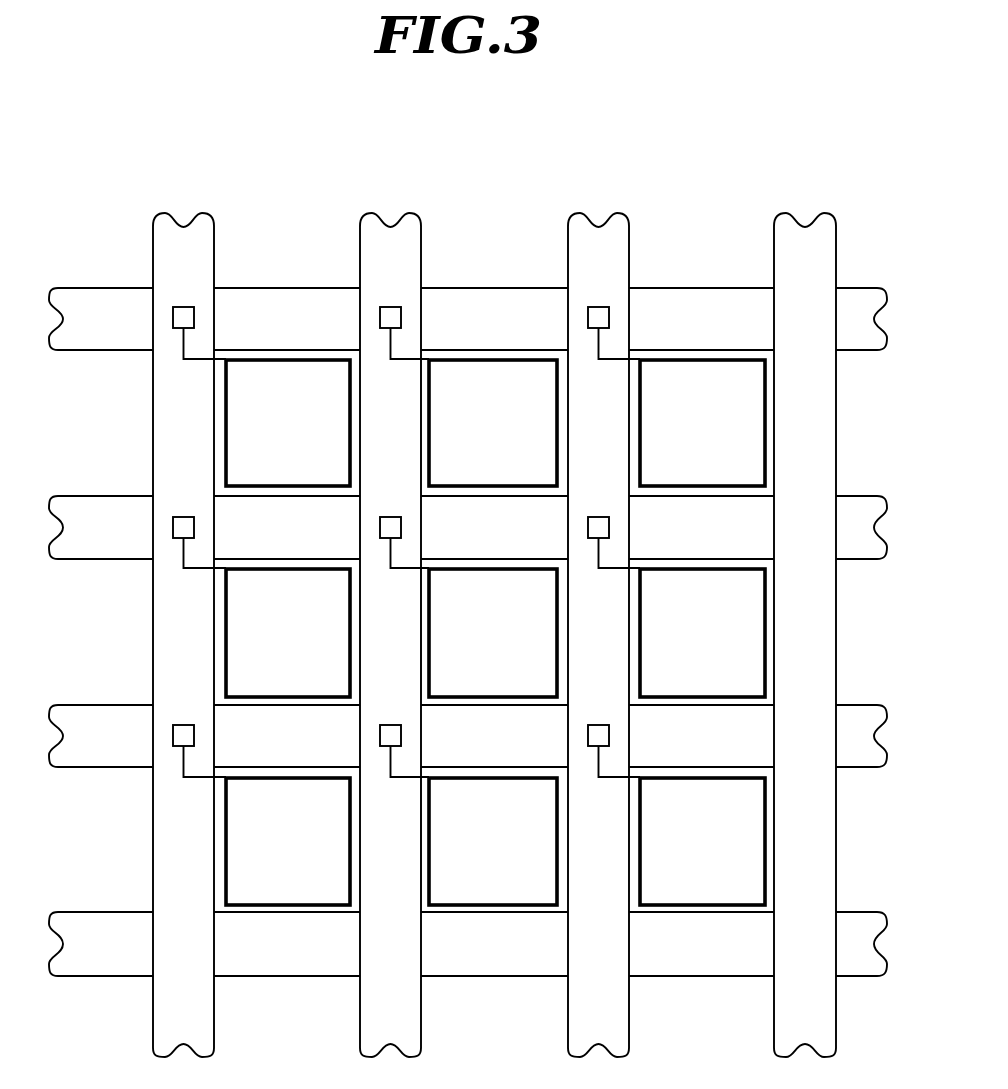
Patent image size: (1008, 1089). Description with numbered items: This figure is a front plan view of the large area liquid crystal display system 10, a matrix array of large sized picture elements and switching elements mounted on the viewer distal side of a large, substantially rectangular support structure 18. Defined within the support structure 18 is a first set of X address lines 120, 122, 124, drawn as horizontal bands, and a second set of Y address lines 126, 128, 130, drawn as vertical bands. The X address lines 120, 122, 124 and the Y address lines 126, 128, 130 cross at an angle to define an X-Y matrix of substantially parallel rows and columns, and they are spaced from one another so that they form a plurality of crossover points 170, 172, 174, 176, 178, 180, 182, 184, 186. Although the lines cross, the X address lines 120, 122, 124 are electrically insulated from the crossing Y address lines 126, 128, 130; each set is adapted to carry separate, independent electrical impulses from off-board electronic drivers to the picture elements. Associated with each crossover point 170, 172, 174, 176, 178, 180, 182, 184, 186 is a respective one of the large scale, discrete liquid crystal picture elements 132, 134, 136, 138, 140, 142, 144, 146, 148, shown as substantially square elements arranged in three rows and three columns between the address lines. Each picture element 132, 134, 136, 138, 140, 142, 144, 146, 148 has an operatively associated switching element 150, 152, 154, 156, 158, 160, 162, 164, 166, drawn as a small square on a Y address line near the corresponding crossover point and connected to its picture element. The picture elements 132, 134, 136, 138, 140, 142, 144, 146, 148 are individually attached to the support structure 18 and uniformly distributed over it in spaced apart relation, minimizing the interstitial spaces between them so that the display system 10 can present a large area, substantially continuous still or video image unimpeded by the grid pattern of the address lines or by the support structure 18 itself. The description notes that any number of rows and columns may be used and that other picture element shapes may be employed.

The display system 10 is at (742, 152).
The support structure 18 is at (148, 283).
The X address line 120 is at (856, 354).
The X address line 122 is at (856, 563).
The X address line 124 is at (860, 772).
The Y address line 126 is at (216, 230).
The Y address line 128 is at (422, 230).
The Y address line 130 is at (630, 233).
The liquid crystal picture element 132 is at (318, 437).
The liquid crystal picture element 134 is at (523, 435).
The liquid crystal picture element 136 is at (731, 433).
The liquid crystal picture element 138 is at (318, 644).
The liquid crystal picture element 140 is at (522, 645).
The liquid crystal picture element 142 is at (733, 644).
The liquid crystal picture element 144 is at (317, 887).
The liquid crystal picture element 146 is at (523, 886).
The liquid crystal picture element 148 is at (738, 885).
The switching element 150 is at (178, 331).
The switching element 152 is at (383, 332).
The switching element 154 is at (590, 332).
The switching element 156 is at (180, 542).
The switching element 158 is at (384, 543).
The switching element 160 is at (590, 543).
The switching element 162 is at (183, 750).
The switching element 164 is at (385, 750).
The switching element 166 is at (592, 752).
The crossover point 170 is at (178, 290).
The crossover point 172 is at (389, 294).
The crossover point 174 is at (598, 297).
The crossover point 176 is at (177, 502).
The crossover point 178 is at (388, 507).
The crossover point 180 is at (603, 502).
The crossover point 182 is at (177, 712).
The crossover point 184 is at (390, 720).
The crossover point 186 is at (601, 716).